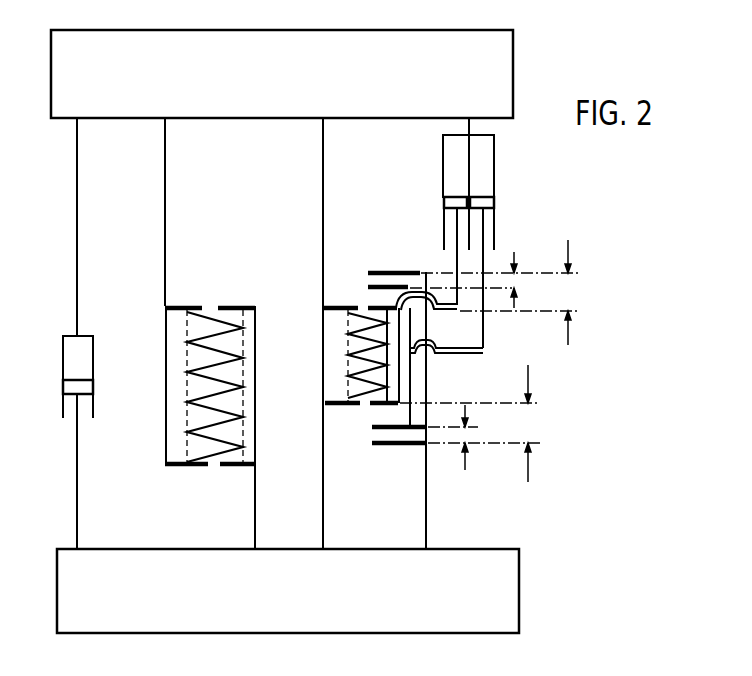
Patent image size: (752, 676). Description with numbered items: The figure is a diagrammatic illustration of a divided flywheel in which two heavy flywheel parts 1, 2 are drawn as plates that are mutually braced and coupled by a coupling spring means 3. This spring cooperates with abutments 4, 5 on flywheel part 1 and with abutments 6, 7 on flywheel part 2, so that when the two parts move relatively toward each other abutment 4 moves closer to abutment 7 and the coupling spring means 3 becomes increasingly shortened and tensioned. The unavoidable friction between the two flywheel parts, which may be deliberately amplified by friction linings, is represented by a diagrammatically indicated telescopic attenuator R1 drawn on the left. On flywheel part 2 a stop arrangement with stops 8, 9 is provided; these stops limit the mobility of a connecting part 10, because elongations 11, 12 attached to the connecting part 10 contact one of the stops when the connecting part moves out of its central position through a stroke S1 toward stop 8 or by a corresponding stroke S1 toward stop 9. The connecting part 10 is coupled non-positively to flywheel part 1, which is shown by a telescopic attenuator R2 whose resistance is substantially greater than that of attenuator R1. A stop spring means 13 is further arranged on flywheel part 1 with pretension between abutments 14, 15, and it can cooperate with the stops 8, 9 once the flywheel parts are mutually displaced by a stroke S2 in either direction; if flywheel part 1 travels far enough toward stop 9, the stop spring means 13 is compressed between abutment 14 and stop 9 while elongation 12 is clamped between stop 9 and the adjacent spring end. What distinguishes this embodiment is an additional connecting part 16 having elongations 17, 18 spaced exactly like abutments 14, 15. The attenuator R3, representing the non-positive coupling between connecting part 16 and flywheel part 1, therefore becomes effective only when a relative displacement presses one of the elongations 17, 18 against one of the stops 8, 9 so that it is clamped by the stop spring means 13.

The flywheel part 1 is at (462, 87).
The flywheel part 2 is at (468, 610).
The coupling spring means 3 is at (205, 410).
The abutment 4 is at (185, 305).
The abutment 5 is at (198, 467).
The abutment 6 is at (233, 305).
The abutment 7 is at (238, 467).
The stop 8 is at (380, 271).
The stop 9 is at (400, 446).
The connecting part 10 is at (452, 354).
The elongation 11 is at (368, 287).
The elongation 12 is at (378, 426).
The stop spring means 13 is at (362, 342).
The abutment 14 is at (340, 313).
The abutment 15 is at (338, 404).
The additional connecting part 16 is at (442, 312).
The elongation 17 is at (377, 305).
The elongation 18 is at (377, 404).
The telescopic attenuator R1 is at (93, 375).
The telescopic attenuator R2 is at (494, 137).
The attenuator R3 is at (443, 137).
The stroke S1 is at (516, 286).
The stroke S2 is at (554, 361).